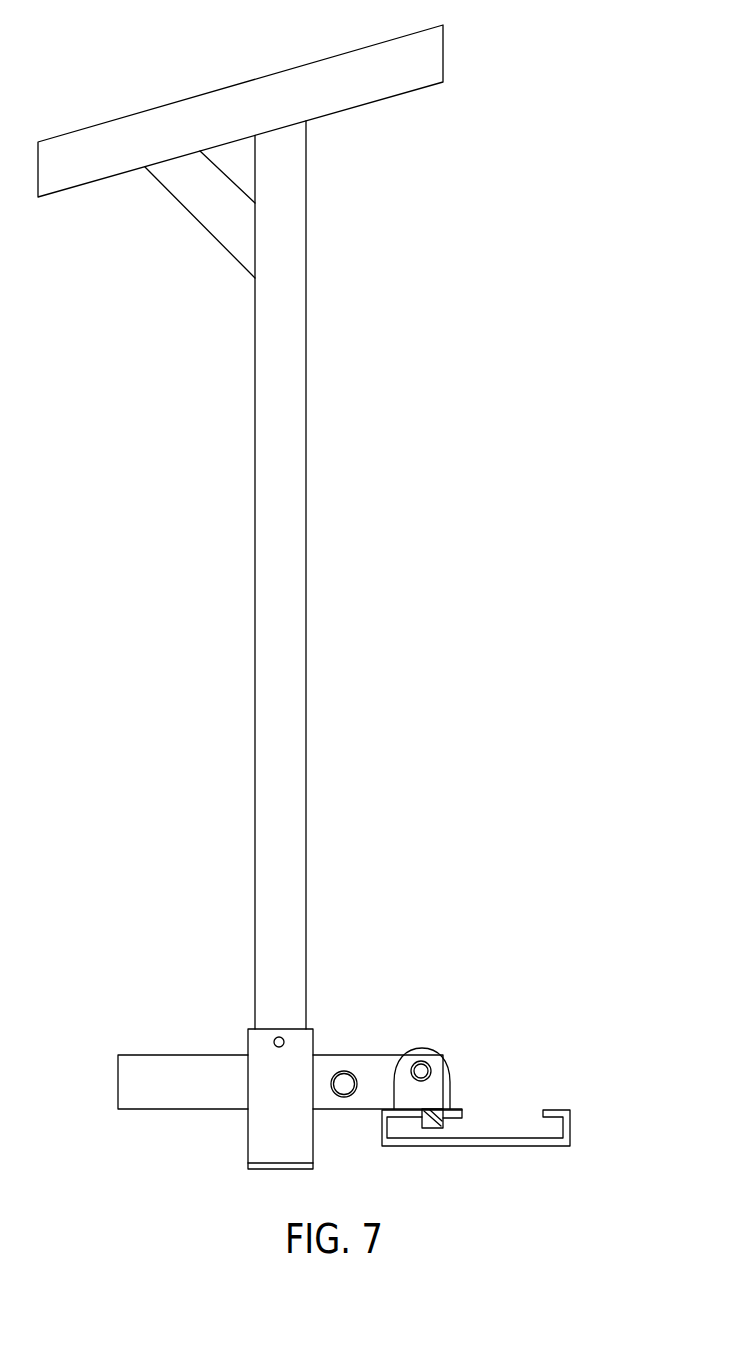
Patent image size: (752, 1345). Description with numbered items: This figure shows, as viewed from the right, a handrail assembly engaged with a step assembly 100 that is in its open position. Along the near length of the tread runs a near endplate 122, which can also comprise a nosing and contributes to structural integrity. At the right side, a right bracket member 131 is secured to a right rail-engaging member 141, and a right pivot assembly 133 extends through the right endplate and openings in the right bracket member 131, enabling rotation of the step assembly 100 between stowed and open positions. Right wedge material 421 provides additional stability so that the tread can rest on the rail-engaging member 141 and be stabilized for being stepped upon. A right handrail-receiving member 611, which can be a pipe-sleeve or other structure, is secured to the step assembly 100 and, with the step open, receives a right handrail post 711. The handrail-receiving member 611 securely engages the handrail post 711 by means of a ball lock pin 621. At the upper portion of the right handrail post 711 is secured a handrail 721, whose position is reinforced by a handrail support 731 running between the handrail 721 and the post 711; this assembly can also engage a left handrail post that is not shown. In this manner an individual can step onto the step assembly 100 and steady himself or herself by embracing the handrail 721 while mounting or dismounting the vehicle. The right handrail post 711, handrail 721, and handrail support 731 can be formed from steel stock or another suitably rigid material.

The step assembly 100 is at (141, 1166).
The near endplate 122 is at (118, 1083).
The right bracket member 131 is at (418, 1050).
The right pivot assembly 133 is at (432, 1066).
The right rail-engaging member 141 is at (566, 1126).
The right wedge material 421 is at (443, 1119).
The right handrail-receiving member 611 is at (255, 1135).
The right ball lock pin 621 is at (284, 1040).
The right handrail post 711 is at (297, 627).
The handrail 721 is at (145, 122).
The handrail support 731 is at (210, 227).